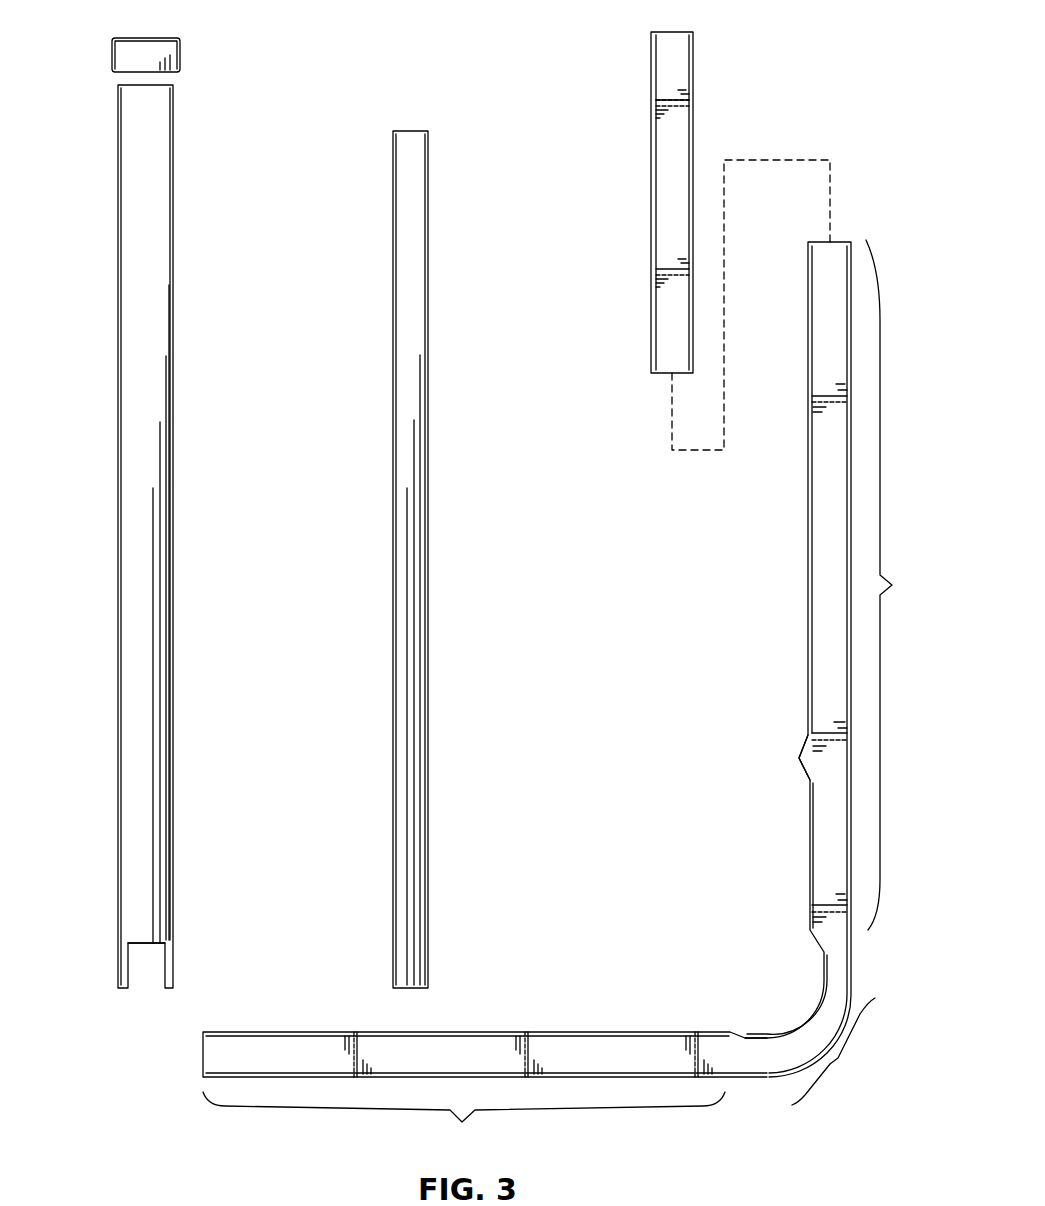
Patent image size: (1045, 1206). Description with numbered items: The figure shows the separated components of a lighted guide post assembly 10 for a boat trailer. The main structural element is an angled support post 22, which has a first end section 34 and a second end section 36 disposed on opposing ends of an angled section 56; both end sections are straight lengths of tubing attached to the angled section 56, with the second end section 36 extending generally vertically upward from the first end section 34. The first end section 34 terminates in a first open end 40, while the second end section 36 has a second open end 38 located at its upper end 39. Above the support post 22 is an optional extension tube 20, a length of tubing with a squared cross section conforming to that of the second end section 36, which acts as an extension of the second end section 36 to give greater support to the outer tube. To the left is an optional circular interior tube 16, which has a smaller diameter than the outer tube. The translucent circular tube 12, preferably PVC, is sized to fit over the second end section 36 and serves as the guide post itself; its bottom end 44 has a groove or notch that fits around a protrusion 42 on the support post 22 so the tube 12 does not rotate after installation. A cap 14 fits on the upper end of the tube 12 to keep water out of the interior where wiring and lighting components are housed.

The assembly 10 is at (108, 36).
The translucent circular tube 12 is at (135, 242).
The cap 14 is at (178, 58).
The interior tube 16 is at (400, 243).
The extension tube 20 is at (660, 196).
The angled support post 22 is at (822, 335).
The first end section 34 is at (464, 1124).
The second end section 36 is at (903, 585).
The second open end 38 is at (684, 20).
The upper end 39 is at (648, 30).
The first open end 40 is at (198, 1056).
The protrusion 42 is at (805, 768).
The bottom end 44 is at (148, 972).
The angled section 56 is at (835, 1051).